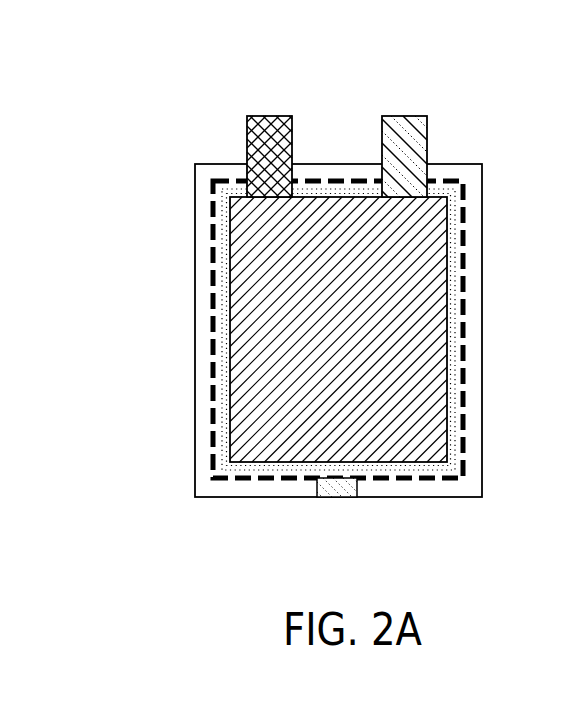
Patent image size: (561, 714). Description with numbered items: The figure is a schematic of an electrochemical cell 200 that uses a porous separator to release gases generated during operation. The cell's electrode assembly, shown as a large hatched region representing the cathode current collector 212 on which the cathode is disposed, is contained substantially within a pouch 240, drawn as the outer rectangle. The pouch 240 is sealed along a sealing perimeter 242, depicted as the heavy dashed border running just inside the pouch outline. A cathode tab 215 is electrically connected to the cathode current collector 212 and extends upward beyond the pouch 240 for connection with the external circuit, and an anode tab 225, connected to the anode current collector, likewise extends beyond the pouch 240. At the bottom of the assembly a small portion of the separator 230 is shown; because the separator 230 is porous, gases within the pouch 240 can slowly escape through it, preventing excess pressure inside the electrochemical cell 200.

The electrochemical cell 200 is at (135, 136).
The cathode current collector 212 is at (230, 268).
The cathode tab 215 is at (247, 138).
The anode tab 225 is at (427, 140).
The separator 230 is at (313, 485).
The pouch 240 is at (195, 458).
The sealing perimeter 242 is at (190, 395).